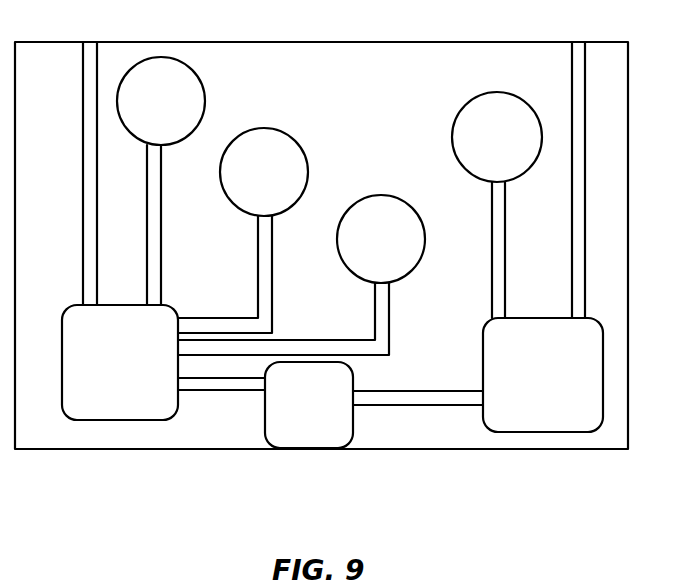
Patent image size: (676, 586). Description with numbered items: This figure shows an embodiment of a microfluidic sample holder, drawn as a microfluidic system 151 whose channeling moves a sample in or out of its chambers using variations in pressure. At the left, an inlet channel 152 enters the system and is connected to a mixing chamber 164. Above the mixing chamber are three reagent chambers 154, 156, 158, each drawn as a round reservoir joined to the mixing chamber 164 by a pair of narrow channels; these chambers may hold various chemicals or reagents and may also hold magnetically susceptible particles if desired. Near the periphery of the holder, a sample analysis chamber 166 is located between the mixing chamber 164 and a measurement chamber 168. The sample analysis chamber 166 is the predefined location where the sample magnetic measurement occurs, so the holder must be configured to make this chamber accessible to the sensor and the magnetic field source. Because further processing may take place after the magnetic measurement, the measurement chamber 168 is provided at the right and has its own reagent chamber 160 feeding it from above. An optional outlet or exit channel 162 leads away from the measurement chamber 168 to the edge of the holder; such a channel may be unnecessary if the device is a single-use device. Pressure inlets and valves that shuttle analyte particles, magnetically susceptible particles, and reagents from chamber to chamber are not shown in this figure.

The microfluidic system 151 is at (335, 42).
The inlet channel 152 is at (83, 42).
The reagent chamber 154 is at (199, 79).
The reagent chamber 156 is at (298, 144).
The reagent chamber 158 is at (417, 214).
The reagent chamber 160 is at (460, 111).
The exit channel 162 is at (578, 42).
The mixing chamber 164 is at (115, 420).
The sample analysis chamber 166 is at (312, 449).
The measurement chamber 168 is at (545, 432).